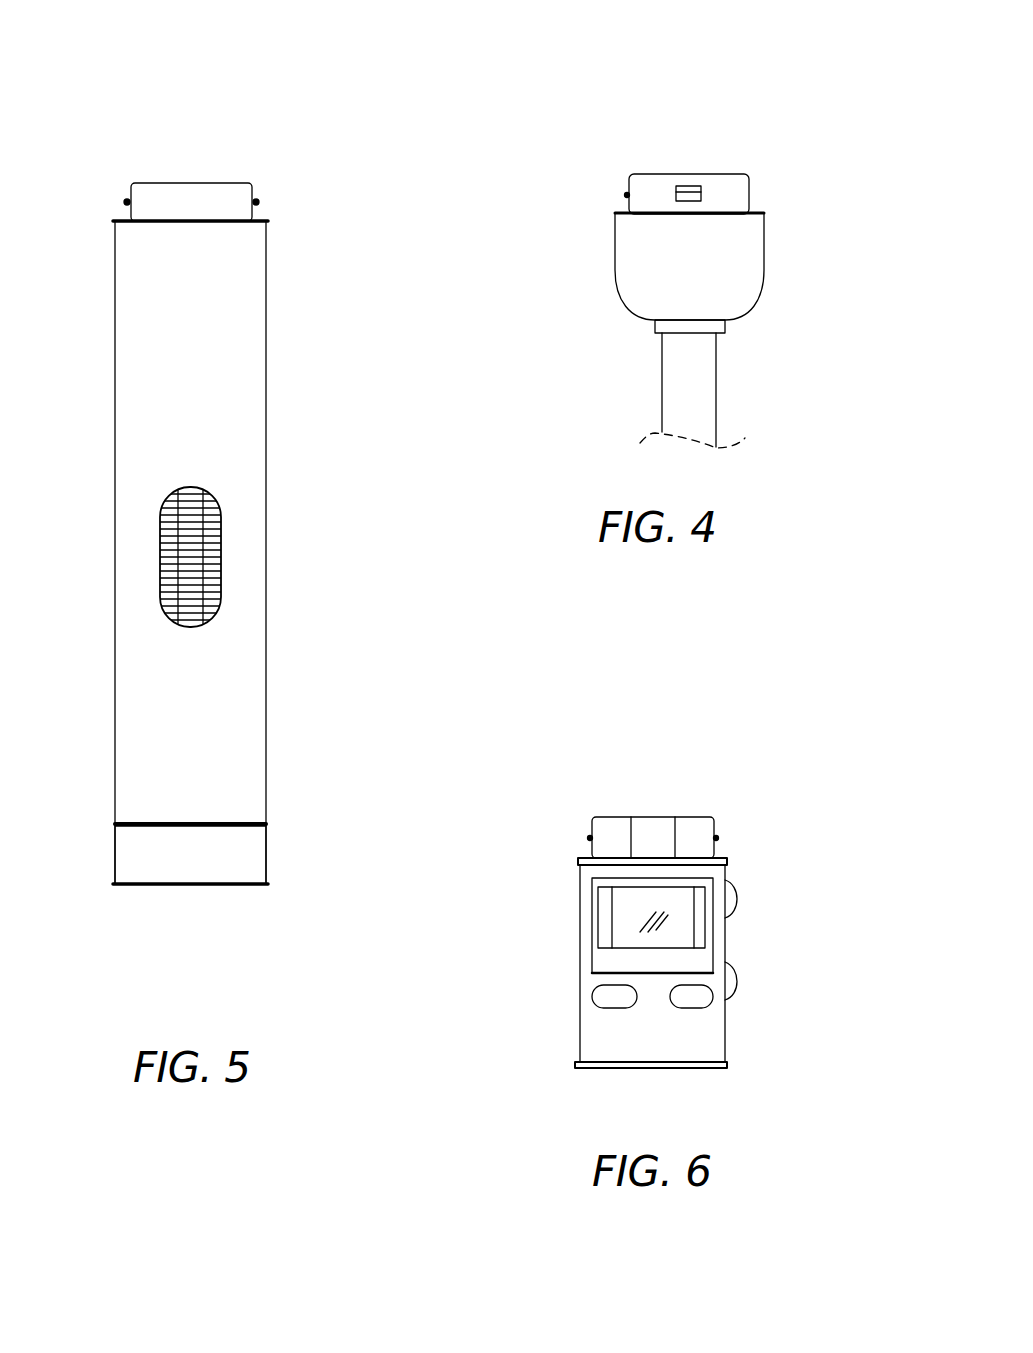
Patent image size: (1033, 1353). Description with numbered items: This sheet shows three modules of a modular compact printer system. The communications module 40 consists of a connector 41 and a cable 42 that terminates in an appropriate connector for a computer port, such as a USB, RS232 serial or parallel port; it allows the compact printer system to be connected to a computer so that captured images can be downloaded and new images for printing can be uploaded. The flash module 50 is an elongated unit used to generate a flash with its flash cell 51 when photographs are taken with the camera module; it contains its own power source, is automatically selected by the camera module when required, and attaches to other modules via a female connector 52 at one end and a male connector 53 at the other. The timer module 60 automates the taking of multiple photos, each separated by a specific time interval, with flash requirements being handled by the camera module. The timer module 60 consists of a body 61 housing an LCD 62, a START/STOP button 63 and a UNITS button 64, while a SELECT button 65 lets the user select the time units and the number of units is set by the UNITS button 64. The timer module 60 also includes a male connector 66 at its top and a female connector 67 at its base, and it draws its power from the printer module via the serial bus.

In FIG. 4, the communications module 40 is at (759, 125).
In FIG. 4, the connector 41 is at (654, 185).
In FIG. 4, the cable 42 is at (680, 385).
In FIG. 5, the flash module 50 is at (303, 179).
In FIG. 5, the flash cell 51 is at (198, 563).
In FIG. 5, the female connector 52 is at (152, 887).
In FIG. 5, the male connector 53 is at (160, 182).
In FIG. 6, the timer module 60 is at (747, 796).
In FIG. 6, the body 61 is at (727, 1048).
In FIG. 6, the LCD 62 is at (622, 928).
In FIG. 6, the START/STOP button 63 is at (698, 998).
In FIG. 6, the UNITS button 64 is at (735, 890).
In FIG. 6, the SELECT button 65 is at (598, 998).
In FIG. 6, the male connector 66 is at (608, 818).
In FIG. 6, the female connector 67 is at (607, 1068).